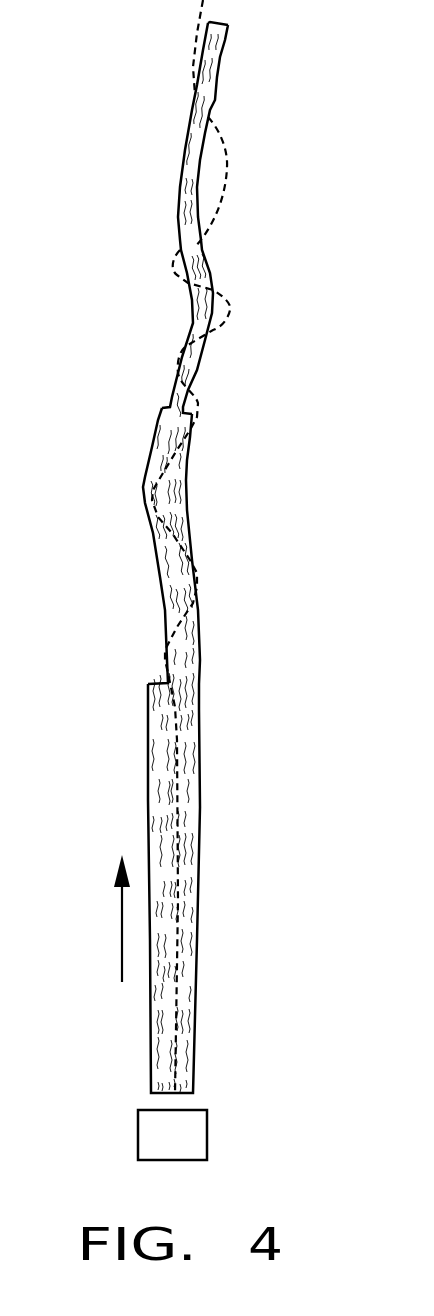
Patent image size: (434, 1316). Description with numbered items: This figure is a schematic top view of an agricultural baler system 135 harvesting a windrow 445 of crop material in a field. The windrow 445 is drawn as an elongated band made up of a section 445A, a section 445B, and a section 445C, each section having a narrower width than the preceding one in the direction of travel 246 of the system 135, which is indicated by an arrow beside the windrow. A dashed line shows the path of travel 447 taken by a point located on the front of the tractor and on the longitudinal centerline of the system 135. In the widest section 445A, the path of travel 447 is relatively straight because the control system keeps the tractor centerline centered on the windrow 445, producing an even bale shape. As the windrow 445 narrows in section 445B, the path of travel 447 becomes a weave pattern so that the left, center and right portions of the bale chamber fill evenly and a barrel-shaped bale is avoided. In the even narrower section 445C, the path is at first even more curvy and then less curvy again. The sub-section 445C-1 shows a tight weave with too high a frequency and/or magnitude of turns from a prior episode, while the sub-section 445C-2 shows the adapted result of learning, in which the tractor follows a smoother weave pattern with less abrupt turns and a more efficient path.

The windrow 445 is at (203, 546).
The section 445A is at (199, 810).
The section 445B is at (182, 513).
The section 445C is at (209, 236).
The sub-section 445C-1 is at (265, 253).
The sub-section 445C-2 is at (248, 2).
The path of travel 447 is at (173, 1037).
The direction of travel 246 is at (120, 928).
The agricultural baler system 135 is at (207, 1143).